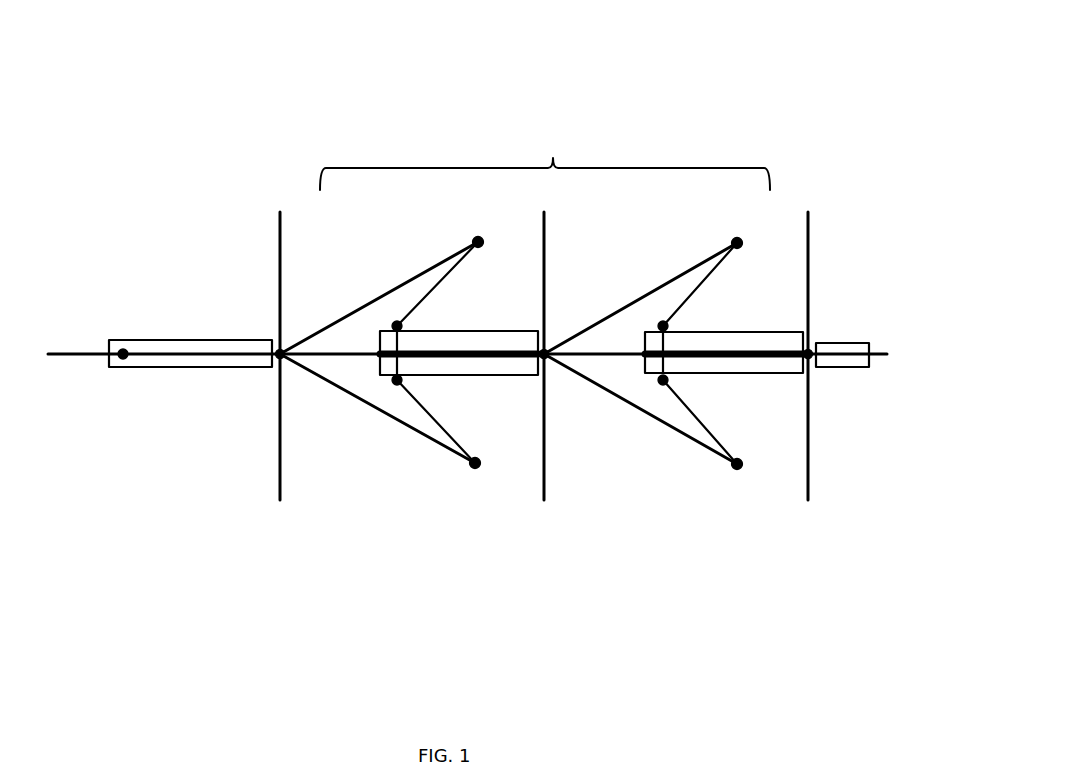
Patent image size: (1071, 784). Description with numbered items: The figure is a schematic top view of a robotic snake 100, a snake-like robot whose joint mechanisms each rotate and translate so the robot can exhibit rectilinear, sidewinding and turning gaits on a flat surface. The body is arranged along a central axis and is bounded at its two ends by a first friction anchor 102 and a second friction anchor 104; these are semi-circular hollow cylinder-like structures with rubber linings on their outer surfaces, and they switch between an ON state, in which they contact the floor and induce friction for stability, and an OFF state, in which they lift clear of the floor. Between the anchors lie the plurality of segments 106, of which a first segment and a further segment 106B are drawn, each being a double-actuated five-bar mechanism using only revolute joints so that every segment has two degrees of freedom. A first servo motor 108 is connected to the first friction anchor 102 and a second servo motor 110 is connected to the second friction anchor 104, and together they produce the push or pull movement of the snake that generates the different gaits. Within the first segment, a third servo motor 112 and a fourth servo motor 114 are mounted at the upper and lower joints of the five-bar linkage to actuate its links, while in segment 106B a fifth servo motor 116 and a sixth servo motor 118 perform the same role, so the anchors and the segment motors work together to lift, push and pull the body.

The robotic snake 100 is at (648, 72).
The first friction anchor 102 is at (88, 352).
The second friction anchor 104 is at (875, 348).
The segment 106 is at (428, 165).
The segment 106B is at (600, 315).
The first servo motor 108 is at (178, 338).
The second servo motor 110 is at (828, 370).
The third servo motor 112 is at (430, 327).
The fourth servo motor 114 is at (435, 380).
The fifth servo motor 116 is at (697, 328).
The sixth servo motor 118 is at (695, 375).